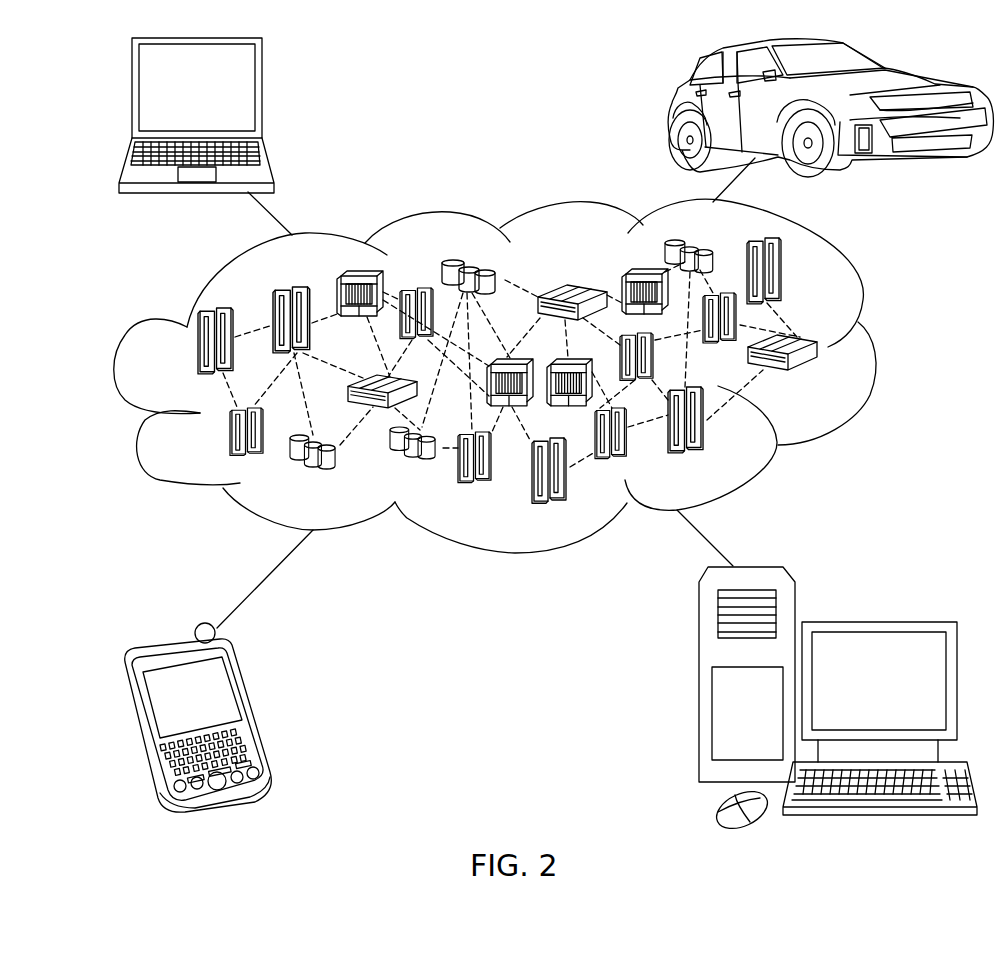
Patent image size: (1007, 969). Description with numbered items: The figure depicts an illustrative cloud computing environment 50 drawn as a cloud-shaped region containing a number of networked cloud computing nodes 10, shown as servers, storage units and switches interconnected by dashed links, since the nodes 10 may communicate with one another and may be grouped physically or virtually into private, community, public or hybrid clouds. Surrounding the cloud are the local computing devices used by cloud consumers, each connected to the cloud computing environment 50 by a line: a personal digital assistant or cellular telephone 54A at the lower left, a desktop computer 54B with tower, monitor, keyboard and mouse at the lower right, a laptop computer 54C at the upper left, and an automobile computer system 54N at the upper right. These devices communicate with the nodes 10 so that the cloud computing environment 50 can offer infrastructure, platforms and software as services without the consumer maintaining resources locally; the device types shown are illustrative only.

The cloud computing node 10 is at (825, 378).
The cloud computing environment 50 is at (877, 350).
The personal digital assistant or cellular telephone 54A is at (252, 710).
The desktop computer 54B is at (875, 620).
The laptop computer 54C is at (262, 92).
The automobile computer system 54N is at (670, 107).